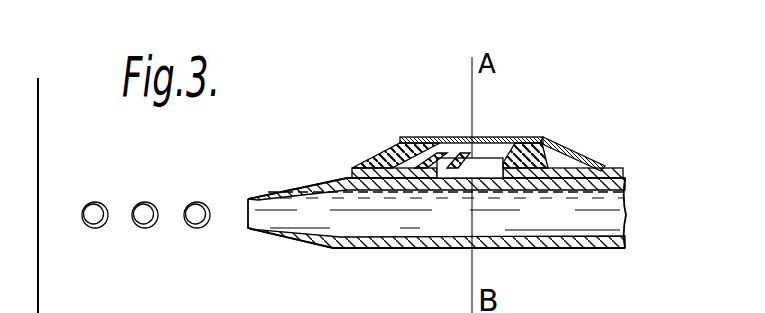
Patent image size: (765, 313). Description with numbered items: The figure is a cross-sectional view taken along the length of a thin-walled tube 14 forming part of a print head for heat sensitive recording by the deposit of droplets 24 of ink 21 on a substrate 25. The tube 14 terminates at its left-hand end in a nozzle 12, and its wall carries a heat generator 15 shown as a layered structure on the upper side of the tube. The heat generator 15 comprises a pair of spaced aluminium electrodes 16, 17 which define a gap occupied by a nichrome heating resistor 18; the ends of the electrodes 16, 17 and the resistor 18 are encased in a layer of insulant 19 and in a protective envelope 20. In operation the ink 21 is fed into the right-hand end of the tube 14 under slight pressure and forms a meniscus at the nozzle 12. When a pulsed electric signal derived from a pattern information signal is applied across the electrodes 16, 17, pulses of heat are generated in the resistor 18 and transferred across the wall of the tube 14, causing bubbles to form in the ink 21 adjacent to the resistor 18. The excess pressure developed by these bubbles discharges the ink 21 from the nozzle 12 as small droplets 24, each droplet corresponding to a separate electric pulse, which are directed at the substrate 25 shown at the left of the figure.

The nozzle 12 is at (250, 212).
The thin-walled tube 14 is at (382, 241).
The heat generator 15 is at (552, 118).
The aluminium electrode 16 is at (387, 170).
The aluminium electrode 17 is at (608, 164).
The nichrome heating resistor 18 is at (462, 147).
The layer of insulant 19 is at (492, 138).
The protective envelope 20 is at (565, 149).
The ink 21 is at (332, 215).
The droplets 24 is at (197, 228).
The substrate 25 is at (38, 105).